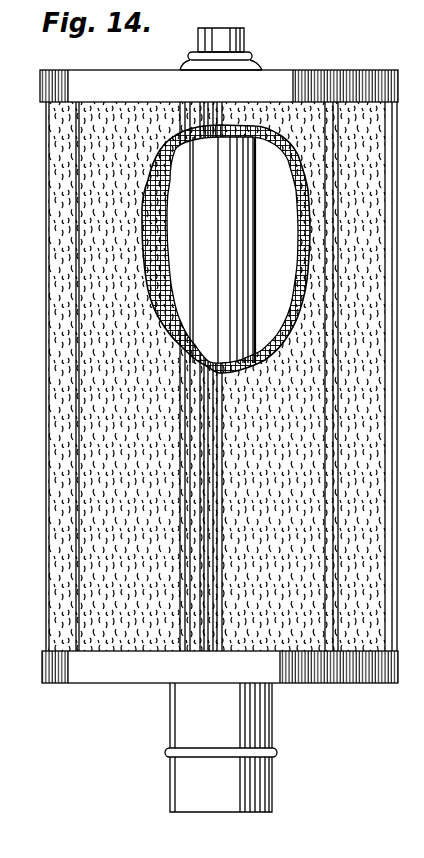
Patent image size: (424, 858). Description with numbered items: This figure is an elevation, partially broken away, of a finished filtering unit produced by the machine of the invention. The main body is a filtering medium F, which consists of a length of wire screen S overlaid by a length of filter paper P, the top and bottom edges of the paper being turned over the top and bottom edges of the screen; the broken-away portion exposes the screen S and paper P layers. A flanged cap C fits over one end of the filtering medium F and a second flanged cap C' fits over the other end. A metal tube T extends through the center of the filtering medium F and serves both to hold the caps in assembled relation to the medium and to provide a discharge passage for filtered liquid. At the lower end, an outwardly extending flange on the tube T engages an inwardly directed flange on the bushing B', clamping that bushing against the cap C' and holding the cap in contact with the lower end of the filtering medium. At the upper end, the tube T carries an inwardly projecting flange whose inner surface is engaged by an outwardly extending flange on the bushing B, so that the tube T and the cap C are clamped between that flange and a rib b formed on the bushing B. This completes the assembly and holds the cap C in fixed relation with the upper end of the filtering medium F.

The bushing B is at (235, 35).
The rib b is at (255, 57).
The flanged cap C is at (219, 68).
The flanged cap C' is at (220, 686).
The filtering medium F is at (58, 366).
The filter paper P is at (305, 152).
The wire screen S is at (298, 210).
The metal tube T is at (242, 296).
The bushing B' is at (202, 747).